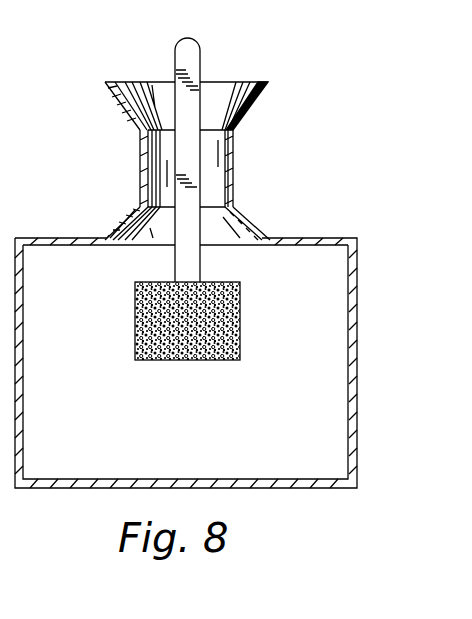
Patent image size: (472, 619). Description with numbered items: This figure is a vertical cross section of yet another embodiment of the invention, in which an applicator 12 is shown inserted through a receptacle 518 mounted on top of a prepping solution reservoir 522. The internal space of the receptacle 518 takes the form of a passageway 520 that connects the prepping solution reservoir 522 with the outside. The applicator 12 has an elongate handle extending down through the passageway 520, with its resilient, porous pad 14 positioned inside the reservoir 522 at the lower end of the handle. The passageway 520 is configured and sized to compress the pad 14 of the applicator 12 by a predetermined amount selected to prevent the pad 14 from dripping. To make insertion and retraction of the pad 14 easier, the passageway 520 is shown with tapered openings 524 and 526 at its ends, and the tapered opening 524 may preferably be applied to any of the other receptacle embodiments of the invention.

The applicator 12 is at (174, 61).
The pad 14 is at (133, 307).
The receptacle 518 is at (242, 162).
The passageway 520 is at (120, 234).
The prepping solution reservoir 522 is at (360, 301).
The tapered opening 524 is at (243, 100).
The tapered opening 526 is at (137, 147).